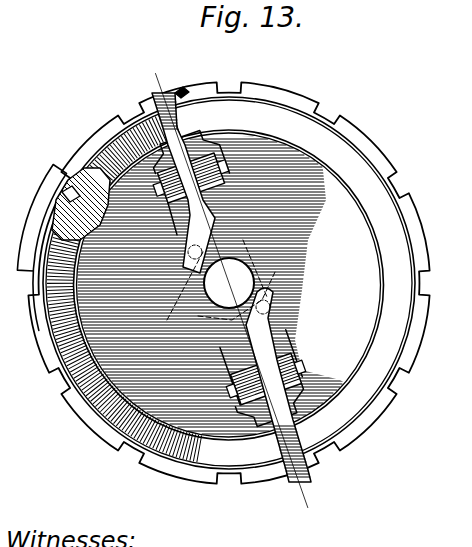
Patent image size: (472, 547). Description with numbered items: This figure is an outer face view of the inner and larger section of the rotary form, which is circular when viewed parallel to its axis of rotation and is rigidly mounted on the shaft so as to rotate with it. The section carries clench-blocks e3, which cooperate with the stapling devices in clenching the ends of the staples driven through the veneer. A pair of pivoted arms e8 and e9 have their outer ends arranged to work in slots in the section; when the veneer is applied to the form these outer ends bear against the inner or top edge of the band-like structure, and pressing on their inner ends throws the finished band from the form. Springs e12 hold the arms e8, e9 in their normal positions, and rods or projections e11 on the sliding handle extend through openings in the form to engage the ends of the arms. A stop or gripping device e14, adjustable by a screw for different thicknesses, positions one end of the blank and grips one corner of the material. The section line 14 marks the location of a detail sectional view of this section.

The pivoted arm e8 is at (155, 107).
The spring e12 is at (160, 163).
The clench-block e3 is at (72, 188).
The stop or gripping device e14 is at (181, 89).
The bolt arm 14 is at (162, 80).
The pivoted arm e9 is at (272, 400).
The rod or projection e11 is at (200, 318).